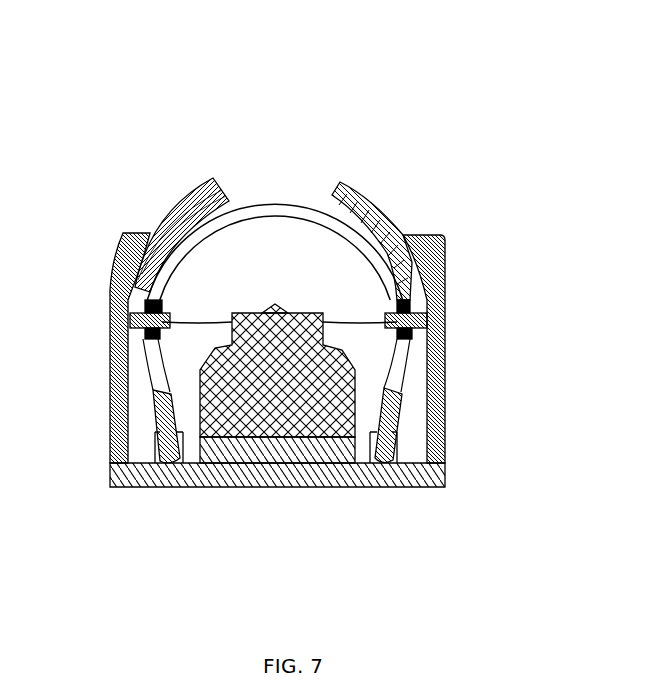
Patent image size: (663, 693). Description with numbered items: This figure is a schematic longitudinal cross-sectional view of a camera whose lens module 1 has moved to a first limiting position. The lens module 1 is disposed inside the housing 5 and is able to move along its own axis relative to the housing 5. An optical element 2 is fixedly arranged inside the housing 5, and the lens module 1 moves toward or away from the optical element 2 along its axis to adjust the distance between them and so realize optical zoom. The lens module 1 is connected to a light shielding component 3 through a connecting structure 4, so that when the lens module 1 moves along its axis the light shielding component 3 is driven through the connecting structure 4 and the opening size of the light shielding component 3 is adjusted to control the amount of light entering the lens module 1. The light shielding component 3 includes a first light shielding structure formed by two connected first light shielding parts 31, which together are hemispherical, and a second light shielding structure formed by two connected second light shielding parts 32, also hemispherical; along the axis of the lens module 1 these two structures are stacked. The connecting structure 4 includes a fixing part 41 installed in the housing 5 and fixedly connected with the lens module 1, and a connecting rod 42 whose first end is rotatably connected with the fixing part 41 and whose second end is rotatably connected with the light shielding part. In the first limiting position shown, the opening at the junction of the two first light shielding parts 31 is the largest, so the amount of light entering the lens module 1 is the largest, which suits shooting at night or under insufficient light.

The lens module 1 is at (315, 470).
The optical element 2 is at (370, 200).
The light shielding component 3 is at (258, 159).
The first light shielding part 31 is at (230, 211).
The second light shielding part 32 is at (328, 205).
The connecting structure 4 is at (352, 476).
The fixing part 41 is at (393, 430).
The connecting rod 42 is at (403, 417).
The housing 5 is at (110, 350).